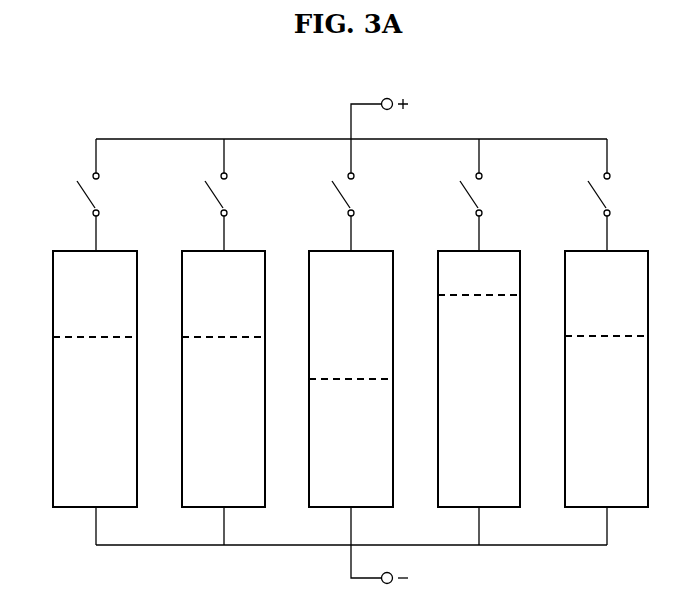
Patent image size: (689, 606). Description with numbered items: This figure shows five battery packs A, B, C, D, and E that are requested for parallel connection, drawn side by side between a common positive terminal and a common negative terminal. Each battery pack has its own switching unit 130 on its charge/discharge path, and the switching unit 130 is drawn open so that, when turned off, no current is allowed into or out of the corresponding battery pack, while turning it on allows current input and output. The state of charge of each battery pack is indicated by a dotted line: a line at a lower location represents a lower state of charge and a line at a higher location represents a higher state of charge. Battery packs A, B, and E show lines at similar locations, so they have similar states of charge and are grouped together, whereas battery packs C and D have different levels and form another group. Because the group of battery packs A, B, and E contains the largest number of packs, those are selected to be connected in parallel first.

The switching unit 130 is at (82, 195).
The battery pack A is at (95, 398).
The battery pack B is at (223, 398).
The battery pack C is at (351, 398).
The battery pack D is at (479, 398).
The battery pack E is at (606, 398).